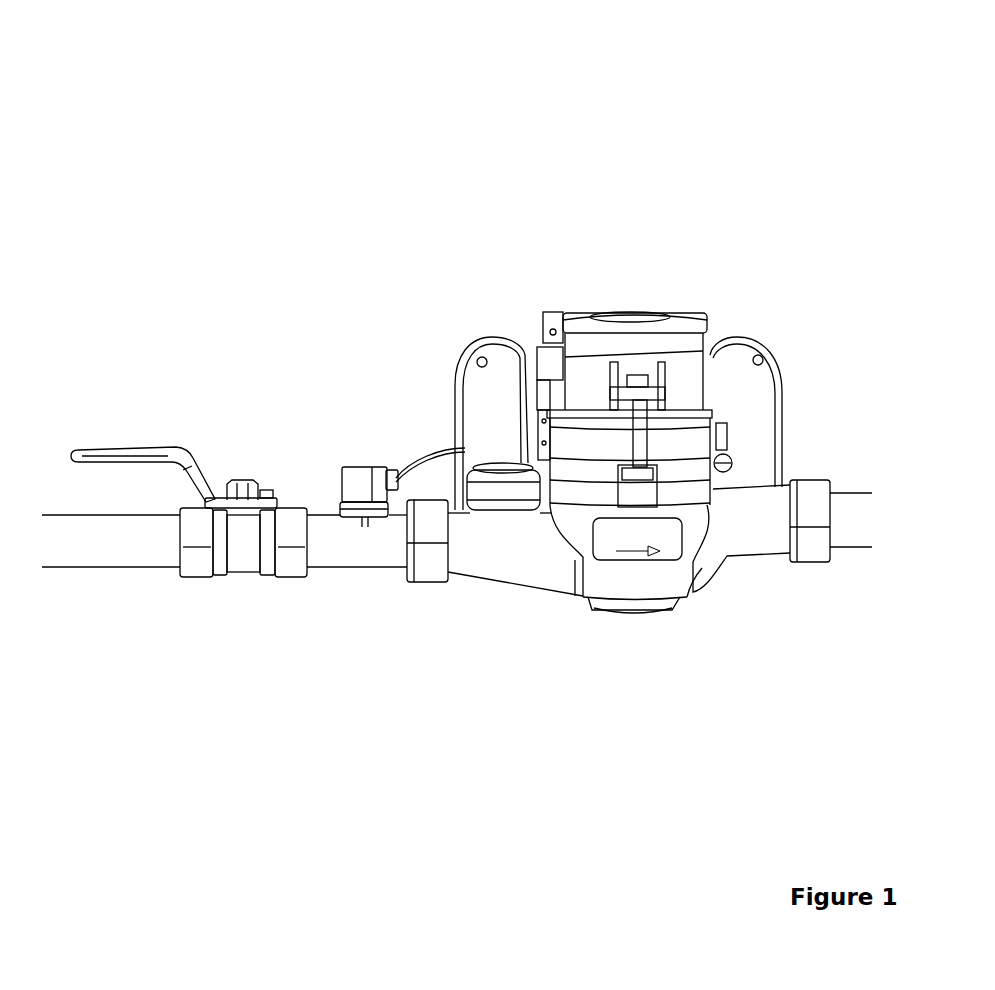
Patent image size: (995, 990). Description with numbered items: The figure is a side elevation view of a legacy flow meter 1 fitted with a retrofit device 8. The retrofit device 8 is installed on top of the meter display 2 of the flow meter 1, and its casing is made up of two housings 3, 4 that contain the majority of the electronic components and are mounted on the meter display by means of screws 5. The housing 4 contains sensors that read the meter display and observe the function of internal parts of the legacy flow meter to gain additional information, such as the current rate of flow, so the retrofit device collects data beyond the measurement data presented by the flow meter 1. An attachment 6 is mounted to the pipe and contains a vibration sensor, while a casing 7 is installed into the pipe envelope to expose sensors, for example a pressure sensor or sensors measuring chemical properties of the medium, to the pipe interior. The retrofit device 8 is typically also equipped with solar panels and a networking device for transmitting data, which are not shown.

The legacy flow meter 1 is at (483, 585).
The meter display 2 is at (577, 456).
The housing 3 is at (455, 385).
The housing 4 is at (694, 365).
The screws 5 is at (648, 454).
The attachment 6 is at (505, 468).
The casing 7 is at (351, 457).
The retrofit device 8 is at (623, 254).